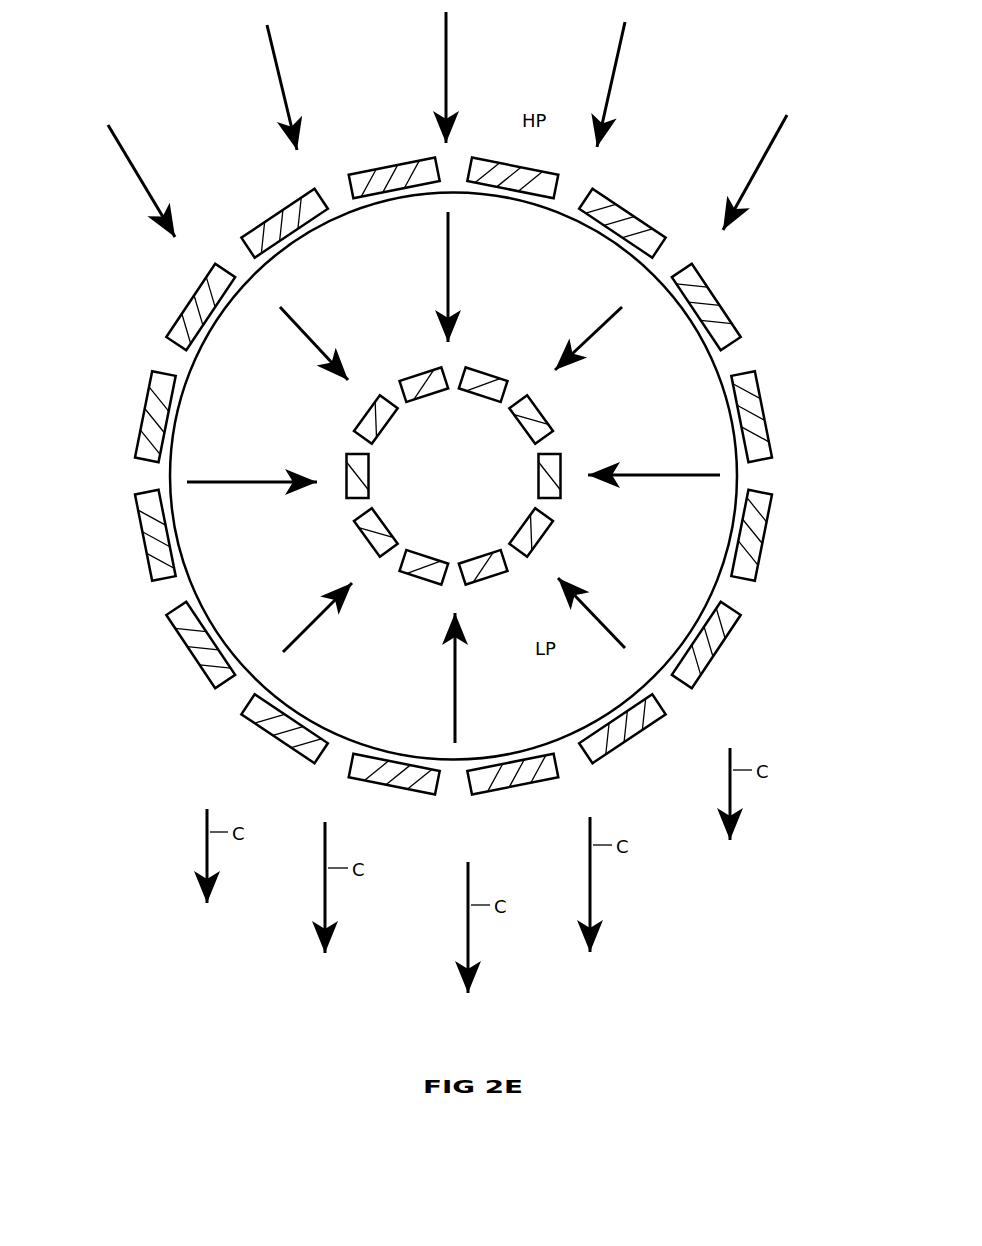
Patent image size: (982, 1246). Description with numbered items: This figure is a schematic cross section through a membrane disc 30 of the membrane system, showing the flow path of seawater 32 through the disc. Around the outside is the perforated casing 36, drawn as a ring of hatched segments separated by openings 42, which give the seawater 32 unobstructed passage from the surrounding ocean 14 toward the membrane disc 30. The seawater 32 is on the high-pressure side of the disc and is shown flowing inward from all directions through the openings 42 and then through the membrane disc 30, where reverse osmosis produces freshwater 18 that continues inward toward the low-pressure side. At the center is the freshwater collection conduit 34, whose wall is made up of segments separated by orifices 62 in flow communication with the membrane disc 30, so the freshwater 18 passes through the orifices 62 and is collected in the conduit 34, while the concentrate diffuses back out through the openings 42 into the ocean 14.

The ocean 14 is at (549, 991).
The freshwater 18 is at (296, 328).
The membrane disc 30 is at (663, 672).
The seawater 32 is at (282, 65).
The freshwater collection conduit 34 is at (555, 530).
The perforated casing 36 is at (766, 530).
The openings 42 is at (742, 352).
The orifices 62 is at (518, 395).